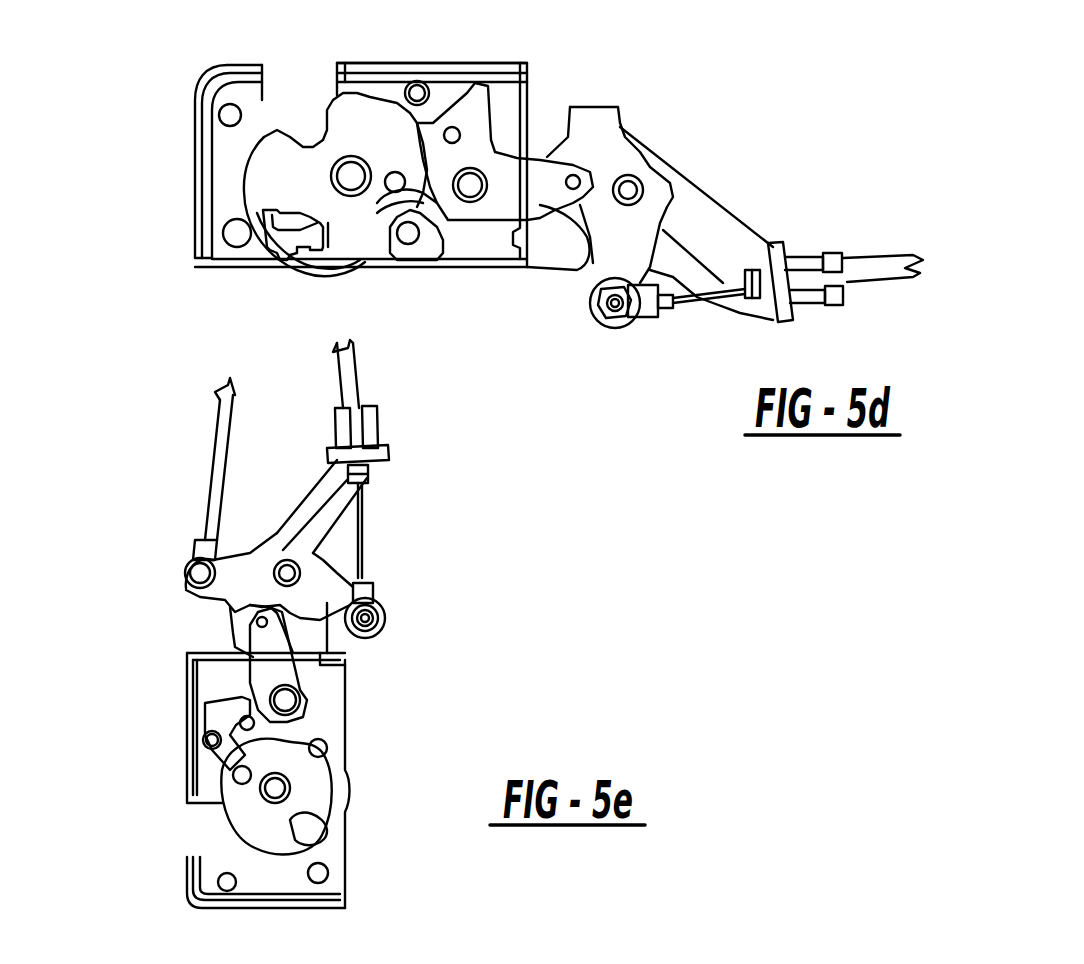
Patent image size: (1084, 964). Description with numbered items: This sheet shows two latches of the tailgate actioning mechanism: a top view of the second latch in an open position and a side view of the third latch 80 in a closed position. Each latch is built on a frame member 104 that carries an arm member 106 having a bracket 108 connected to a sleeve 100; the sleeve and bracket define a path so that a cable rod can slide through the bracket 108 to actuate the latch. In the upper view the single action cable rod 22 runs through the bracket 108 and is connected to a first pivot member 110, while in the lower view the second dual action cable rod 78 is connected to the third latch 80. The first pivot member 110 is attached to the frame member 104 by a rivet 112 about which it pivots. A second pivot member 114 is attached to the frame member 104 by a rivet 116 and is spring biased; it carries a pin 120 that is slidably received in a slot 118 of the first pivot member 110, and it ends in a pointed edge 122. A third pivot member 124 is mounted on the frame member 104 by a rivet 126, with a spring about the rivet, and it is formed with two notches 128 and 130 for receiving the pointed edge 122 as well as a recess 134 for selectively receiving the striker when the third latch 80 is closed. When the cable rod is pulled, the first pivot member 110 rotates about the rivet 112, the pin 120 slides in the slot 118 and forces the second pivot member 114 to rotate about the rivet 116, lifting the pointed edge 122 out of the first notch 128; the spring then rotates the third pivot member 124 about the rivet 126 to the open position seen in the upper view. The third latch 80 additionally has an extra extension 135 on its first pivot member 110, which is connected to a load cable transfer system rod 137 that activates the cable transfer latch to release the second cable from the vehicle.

In FIG. 5D, the single action cable rod 22 is at (695, 305).
In FIG. 5E, the second dual action cable rod 78 is at (363, 563).
In FIG. 5E, the third latch 80 is at (118, 868).
In FIG. 5D, the sleeve 100 is at (873, 267).
In FIG. 5D, the frame member 104 is at (280, 102).
In FIG. 5E, the frame member 104 is at (342, 883).
In FIG. 5D, the arm member 106 is at (700, 223).
In FIG. 5E, the arm member 106 is at (380, 473).
In FIG. 5D, the bracket 108 is at (817, 250).
In FIG. 5E, the bracket 108 is at (377, 427).
In FIG. 5D, the first pivot member 110 is at (597, 120).
In FIG. 5E, the first pivot member 110 is at (337, 655).
In FIG. 5D, the rivet 112 is at (633, 188).
In FIG. 5E, the rivet 112 is at (287, 570).
In FIG. 5D, the second pivot member 114 is at (530, 127).
In FIG. 5E, the second pivot member 114 is at (263, 652).
In FIG. 5D, the rivet 116 is at (470, 190).
In FIG. 5E, the rivet 116 is at (272, 697).
In FIG. 5E, the slot 118 is at (190, 580).
In FIG. 5D, the pin 120 is at (573, 190).
In FIG. 5E, the pin 120 is at (258, 621).
In FIG. 5D, the pointed edge 122 is at (462, 90).
In FIG. 5D, the third pivot member 124 is at (283, 155).
In FIG. 5E, the third pivot member 124 is at (320, 803).
In FIG. 5D, the rivet 126 is at (307, 265).
In FIG. 5E, the rivet 126 is at (327, 751).
In FIG. 5D, the first notch 128 is at (357, 178).
In FIG. 5E, the first notch 128 is at (227, 802).
In FIG. 5D, the notch 130 is at (345, 98).
In FIG. 5E, the notch 130 is at (213, 815).
In FIG. 5D, the recess 134 is at (403, 123).
In FIG. 5E, the recess 134 is at (333, 850).
In FIG. 5E, the extra extension 135 is at (232, 573).
In FIG. 5E, the load cable transfer system rod 137 is at (220, 450).